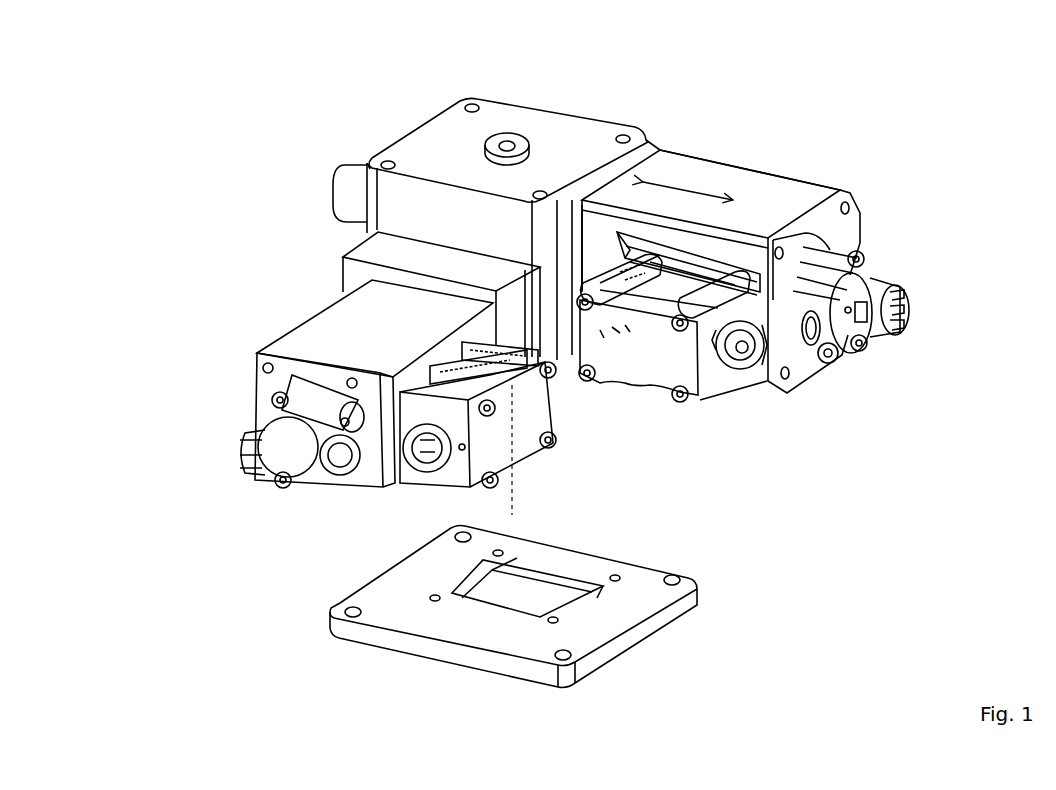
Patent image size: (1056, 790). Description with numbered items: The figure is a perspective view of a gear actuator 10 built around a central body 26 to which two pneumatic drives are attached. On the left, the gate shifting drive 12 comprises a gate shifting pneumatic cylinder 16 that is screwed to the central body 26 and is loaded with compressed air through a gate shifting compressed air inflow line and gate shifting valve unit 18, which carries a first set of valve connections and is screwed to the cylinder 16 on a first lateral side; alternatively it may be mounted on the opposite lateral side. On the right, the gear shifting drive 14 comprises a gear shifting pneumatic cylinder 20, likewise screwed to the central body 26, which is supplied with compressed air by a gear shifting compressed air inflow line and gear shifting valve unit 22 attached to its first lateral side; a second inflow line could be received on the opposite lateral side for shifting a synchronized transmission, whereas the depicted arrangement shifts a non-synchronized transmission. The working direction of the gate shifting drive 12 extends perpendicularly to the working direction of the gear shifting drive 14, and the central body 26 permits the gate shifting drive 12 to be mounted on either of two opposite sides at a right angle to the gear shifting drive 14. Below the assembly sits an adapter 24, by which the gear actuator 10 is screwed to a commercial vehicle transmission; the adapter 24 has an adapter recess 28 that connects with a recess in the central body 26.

The gear actuator 10 is at (927, 100).
The gate shifting drive 12 is at (287, 263).
The gear shifting drive 14 is at (738, 128).
The gate shifting pneumatic cylinder 16 is at (337, 327).
The gate shifting compressed air inflow line and gate shifting valve unit 18 is at (510, 442).
The gear shifting pneumatic cylinder 20 is at (800, 187).
The gear shifting compressed air inflow line and gear shifting valve unit 22 is at (705, 372).
The adapter 24 is at (685, 600).
The central body 26 is at (518, 125).
The adapter recess 28 is at (510, 595).